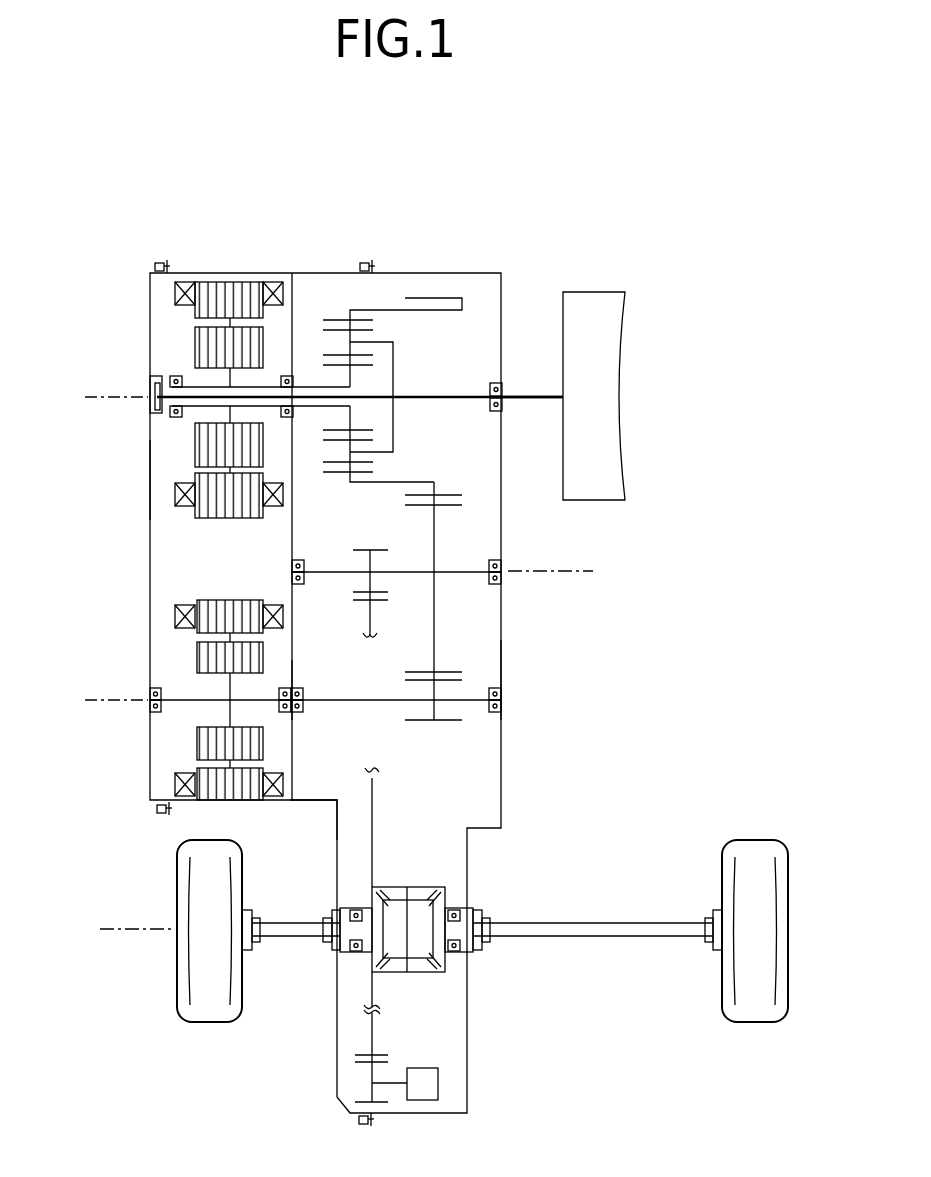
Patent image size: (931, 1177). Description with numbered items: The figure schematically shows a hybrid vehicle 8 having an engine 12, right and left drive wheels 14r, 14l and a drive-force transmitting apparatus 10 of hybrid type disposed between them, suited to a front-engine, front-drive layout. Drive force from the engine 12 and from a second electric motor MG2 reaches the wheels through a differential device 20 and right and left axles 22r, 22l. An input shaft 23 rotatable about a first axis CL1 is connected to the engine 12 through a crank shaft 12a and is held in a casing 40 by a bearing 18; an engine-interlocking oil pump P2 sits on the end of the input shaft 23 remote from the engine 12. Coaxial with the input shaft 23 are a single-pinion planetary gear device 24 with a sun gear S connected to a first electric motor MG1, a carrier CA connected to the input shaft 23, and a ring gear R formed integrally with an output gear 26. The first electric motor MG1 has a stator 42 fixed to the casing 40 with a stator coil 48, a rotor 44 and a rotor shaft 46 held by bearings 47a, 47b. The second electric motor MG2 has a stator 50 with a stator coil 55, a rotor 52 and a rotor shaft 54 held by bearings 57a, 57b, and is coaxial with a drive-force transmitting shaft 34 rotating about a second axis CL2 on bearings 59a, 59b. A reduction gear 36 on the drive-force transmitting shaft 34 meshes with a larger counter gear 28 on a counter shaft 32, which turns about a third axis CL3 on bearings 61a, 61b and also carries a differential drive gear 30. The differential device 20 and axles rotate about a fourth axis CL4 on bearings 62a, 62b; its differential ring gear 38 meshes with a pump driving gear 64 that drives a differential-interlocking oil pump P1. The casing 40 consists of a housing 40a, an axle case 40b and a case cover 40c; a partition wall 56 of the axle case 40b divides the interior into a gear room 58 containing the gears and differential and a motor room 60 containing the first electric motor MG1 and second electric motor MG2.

The hybrid vehicle 8 is at (567, 159).
The drive-force transmitting apparatus 10 is at (282, 207).
The engine 12 is at (612, 498).
The crank shaft 12a is at (528, 394).
The left drive wheel 14l is at (214, 1020).
The right drive wheel 14r is at (758, 1020).
The bearing 18 is at (491, 407).
The differential device 20 is at (446, 986).
The left axle 22l is at (288, 921).
The right axle 22r is at (597, 921).
The input shaft 23 is at (443, 394).
The planetary gear device 24 is at (383, 370).
The output gear 26 is at (418, 298).
The counter gear 28 is at (408, 502).
The differential drive gear 30 is at (388, 548).
The counter shaft 32 is at (420, 578).
The drive-force transmitting shaft 34 is at (325, 703).
The reduction gear 36 is at (430, 722).
The differential ring gear 38 is at (353, 599).
The casing 40 is at (470, 268).
The housing 40a is at (503, 690).
The axle case 40b is at (313, 801).
The case cover 40c is at (149, 481).
The stator 42 is at (226, 290).
The rotor 44 is at (210, 355).
The rotor shaft 46 is at (178, 418).
The bearing 47a is at (170, 414).
The bearing 47b is at (290, 382).
The stator coil 48 is at (178, 285).
The stator 50 is at (215, 800).
The rotor 52 is at (208, 745).
The rotor shaft 54 is at (181, 698).
The stator coil 55 is at (178, 785).
The partition wall 56 is at (292, 540).
The bearing 57a is at (150, 696).
The bearing 57b is at (295, 688).
The gear room 58 is at (459, 625).
The bearing 59a is at (304, 695).
The bearing 59b is at (503, 702).
The motor room 60 is at (181, 545).
The bearing 61a is at (292, 576).
The bearing 61b is at (502, 578).
The bearing 62a is at (352, 952).
The bearing 62b is at (462, 952).
The pump driving gear 64 is at (376, 1104).
The first electric motor MG1 is at (189, 377).
The second electric motor MG2 is at (190, 698).
The carrier CA is at (393, 342).
The sun gear S is at (338, 428).
The ring gear R is at (336, 472).
The differential-interlocking oil pump P1 is at (405, 1084).
The engine-interlocking oil pump P2 is at (152, 392).
The first axis CL1 is at (100, 402).
The second axis CL2 is at (100, 705).
The third axis CL3 is at (556, 574).
The fourth axis CL4 is at (118, 933).